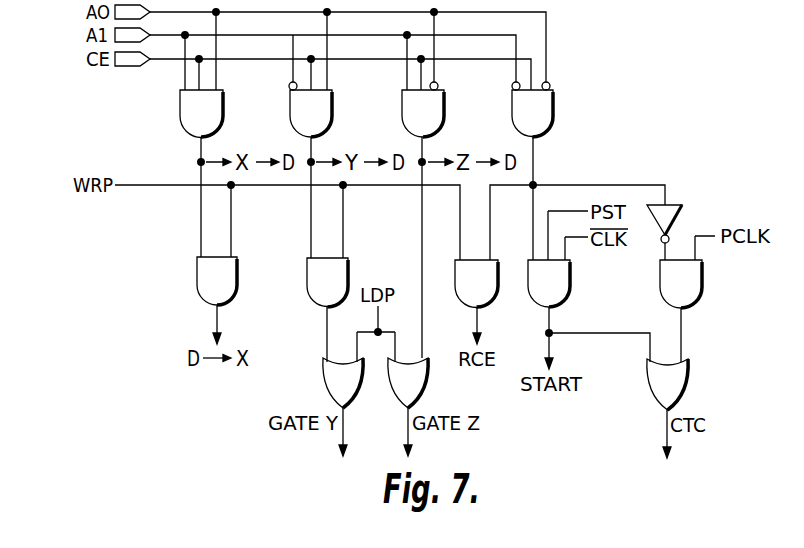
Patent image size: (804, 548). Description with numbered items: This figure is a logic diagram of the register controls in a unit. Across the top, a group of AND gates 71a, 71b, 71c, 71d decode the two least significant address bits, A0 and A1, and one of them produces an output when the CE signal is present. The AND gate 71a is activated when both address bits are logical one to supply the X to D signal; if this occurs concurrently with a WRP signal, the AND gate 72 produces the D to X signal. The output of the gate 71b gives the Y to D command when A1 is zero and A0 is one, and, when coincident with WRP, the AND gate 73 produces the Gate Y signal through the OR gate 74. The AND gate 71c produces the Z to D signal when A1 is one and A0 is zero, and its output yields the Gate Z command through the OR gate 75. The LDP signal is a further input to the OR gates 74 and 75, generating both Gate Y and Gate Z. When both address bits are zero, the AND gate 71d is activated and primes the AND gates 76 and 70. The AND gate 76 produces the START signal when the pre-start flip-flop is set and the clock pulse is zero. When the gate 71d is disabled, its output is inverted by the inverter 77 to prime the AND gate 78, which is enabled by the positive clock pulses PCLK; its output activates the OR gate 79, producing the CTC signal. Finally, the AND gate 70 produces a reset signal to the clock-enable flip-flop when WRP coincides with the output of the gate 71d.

The AND gate 70 is at (493, 302).
The AND gate 71a is at (180, 110).
The AND gate 71b is at (290, 110).
The AND gate 71c is at (402, 110).
The AND gate 71d is at (512, 110).
The AND gate 72 is at (193, 276).
The AND gate 73 is at (303, 277).
The OR gate 74 is at (323, 383).
The OR gate 75 is at (427, 390).
The AND gate 76 is at (566, 302).
The inverter 77 is at (680, 207).
The AND gate 78 is at (698, 302).
The OR gate 79 is at (689, 381).